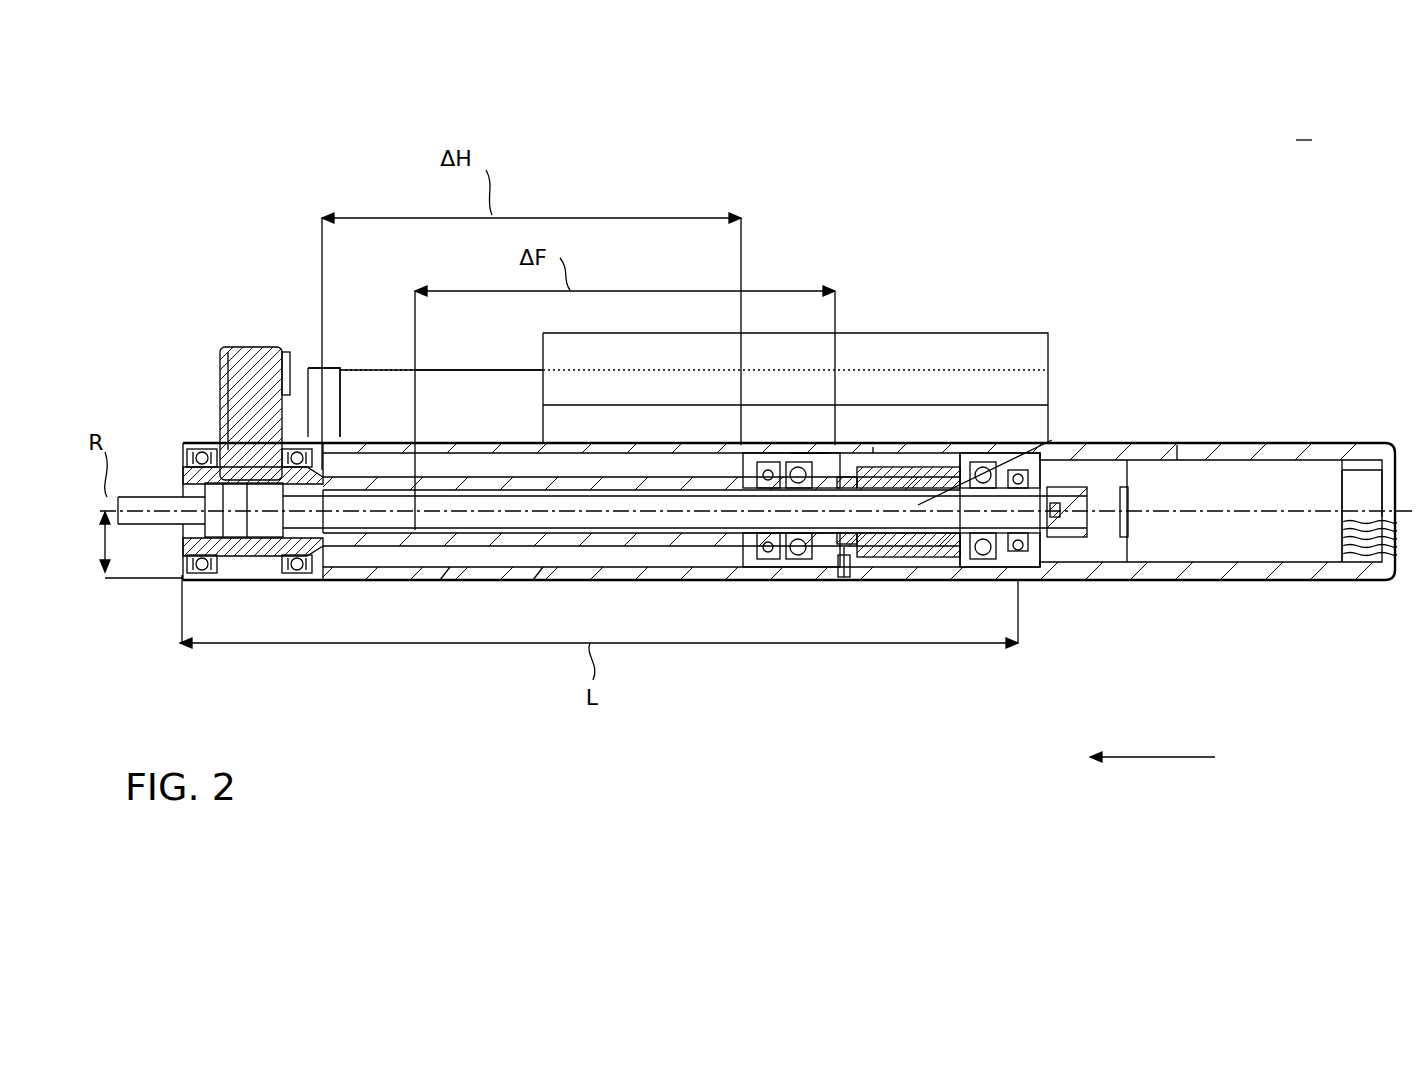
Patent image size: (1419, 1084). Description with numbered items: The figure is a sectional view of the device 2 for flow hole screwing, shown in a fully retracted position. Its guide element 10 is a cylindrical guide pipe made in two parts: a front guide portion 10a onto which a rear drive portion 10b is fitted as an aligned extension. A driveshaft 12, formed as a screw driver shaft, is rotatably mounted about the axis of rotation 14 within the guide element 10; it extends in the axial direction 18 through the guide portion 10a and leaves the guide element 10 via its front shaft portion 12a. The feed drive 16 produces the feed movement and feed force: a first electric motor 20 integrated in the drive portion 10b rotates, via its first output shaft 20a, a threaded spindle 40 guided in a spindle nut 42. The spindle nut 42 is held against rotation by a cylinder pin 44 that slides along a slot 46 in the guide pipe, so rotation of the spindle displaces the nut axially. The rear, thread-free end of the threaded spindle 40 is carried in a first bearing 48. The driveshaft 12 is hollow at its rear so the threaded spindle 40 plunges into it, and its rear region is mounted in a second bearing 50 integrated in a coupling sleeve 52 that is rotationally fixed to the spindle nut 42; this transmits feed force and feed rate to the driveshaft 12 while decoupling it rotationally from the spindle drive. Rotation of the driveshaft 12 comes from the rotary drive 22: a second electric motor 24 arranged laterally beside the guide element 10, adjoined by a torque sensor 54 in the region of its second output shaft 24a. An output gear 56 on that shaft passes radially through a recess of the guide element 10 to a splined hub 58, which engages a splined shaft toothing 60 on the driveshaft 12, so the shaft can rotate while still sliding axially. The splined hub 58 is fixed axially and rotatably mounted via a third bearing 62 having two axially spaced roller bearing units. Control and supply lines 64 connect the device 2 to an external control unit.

The device 2 is at (1214, 235).
The guide element 10 is at (948, 444).
The front guide portion 10a is at (798, 447).
The rear drive portion 10b is at (1163, 493).
The driveshaft 12 is at (365, 575).
The front shaft portion 12a is at (160, 525).
The axis of rotation 14 is at (143, 524).
The feed drive 16 is at (1040, 483).
The axial direction 18 is at (1157, 760).
The first electric motor 20 is at (1213, 537).
The first output shaft 20a is at (1105, 510).
The rotary drive 22 is at (547, 333).
The second electric motor 24 is at (770, 353).
The second output shaft 24a is at (237, 350).
The threaded spindle 40 is at (692, 512).
The spindle nut 42 is at (912, 540).
The cylinder pin 44 is at (845, 565).
The slot 46 is at (538, 575).
The first bearing 48 is at (975, 560).
The second bearing 50 is at (787, 548).
The coupling sleeve 52 is at (873, 447).
The torque sensor 54 is at (472, 392).
The output gear 56 is at (300, 402).
The splined hub 58 is at (263, 580).
The splined shaft toothing 60 is at (443, 575).
The third bearing 62 is at (193, 458).
The control and supply lines 64 is at (1338, 553).